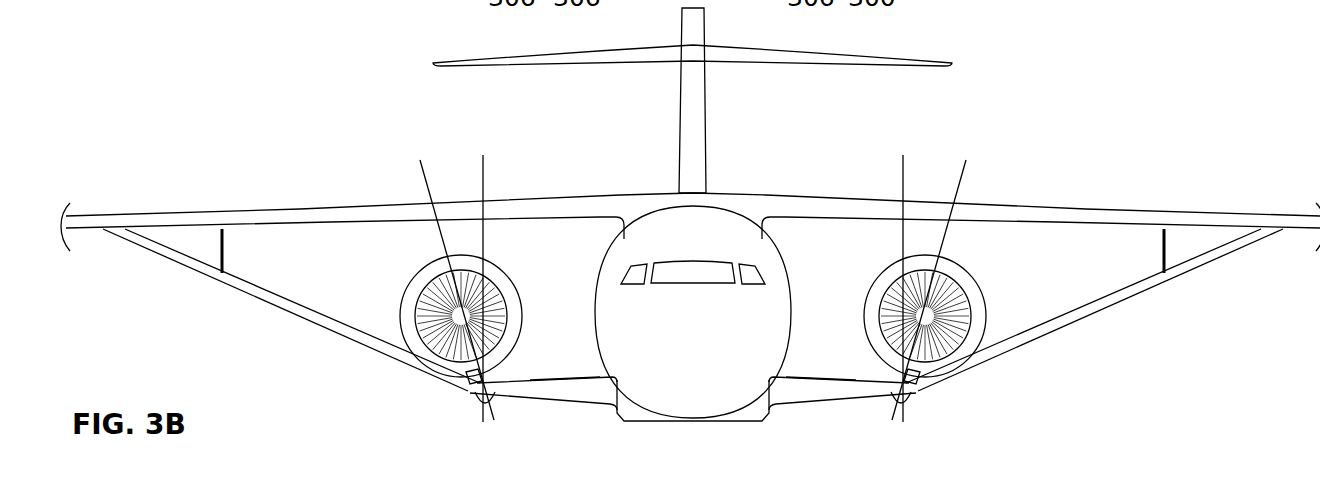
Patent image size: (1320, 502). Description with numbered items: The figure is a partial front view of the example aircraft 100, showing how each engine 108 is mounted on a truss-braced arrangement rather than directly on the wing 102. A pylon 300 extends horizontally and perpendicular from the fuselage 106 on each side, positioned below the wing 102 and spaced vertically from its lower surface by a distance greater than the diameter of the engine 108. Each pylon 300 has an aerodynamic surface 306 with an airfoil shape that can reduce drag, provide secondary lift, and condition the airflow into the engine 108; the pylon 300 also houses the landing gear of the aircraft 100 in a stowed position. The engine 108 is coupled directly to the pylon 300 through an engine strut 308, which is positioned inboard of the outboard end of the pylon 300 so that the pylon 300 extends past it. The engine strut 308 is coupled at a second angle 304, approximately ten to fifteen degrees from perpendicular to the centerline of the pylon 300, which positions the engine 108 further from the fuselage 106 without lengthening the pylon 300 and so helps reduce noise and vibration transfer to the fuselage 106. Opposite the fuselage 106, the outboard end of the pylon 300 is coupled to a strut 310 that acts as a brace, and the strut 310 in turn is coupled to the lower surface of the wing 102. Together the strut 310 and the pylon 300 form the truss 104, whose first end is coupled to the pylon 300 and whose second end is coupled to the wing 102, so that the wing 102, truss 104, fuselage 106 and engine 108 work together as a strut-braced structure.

The aircraft 100 is at (1150, 45).
The wing 102 is at (303, 207).
The truss 104 is at (425, 374).
The fuselage 106 is at (786, 280).
The engine 108 is at (503, 276).
The pylon 300 is at (510, 403).
The second angle 304 is at (424, 173).
The aerodynamic surface 306 is at (562, 395).
The engine strut 308 is at (458, 394).
The strut 310 is at (305, 322).